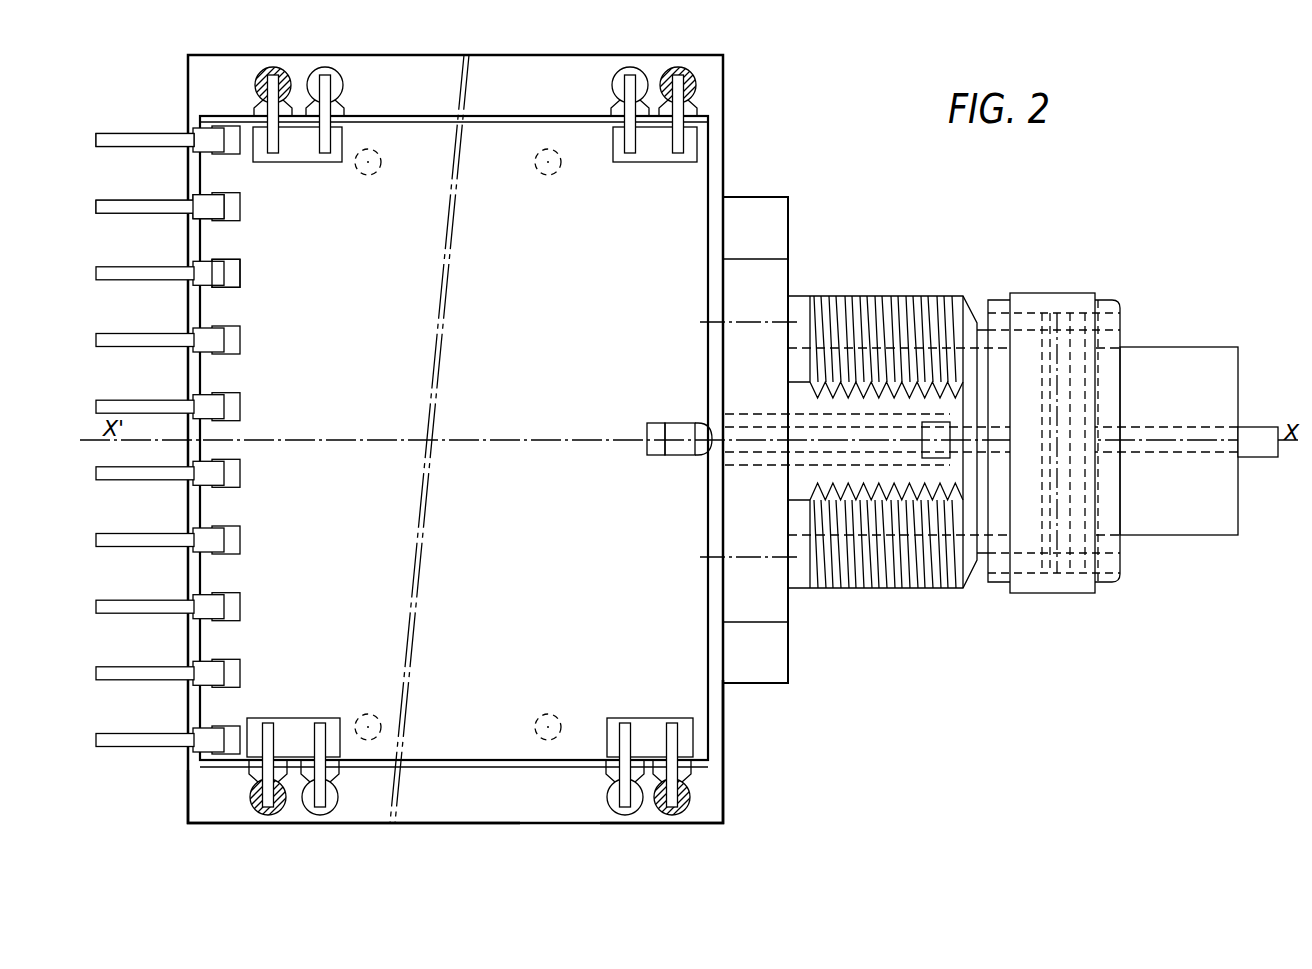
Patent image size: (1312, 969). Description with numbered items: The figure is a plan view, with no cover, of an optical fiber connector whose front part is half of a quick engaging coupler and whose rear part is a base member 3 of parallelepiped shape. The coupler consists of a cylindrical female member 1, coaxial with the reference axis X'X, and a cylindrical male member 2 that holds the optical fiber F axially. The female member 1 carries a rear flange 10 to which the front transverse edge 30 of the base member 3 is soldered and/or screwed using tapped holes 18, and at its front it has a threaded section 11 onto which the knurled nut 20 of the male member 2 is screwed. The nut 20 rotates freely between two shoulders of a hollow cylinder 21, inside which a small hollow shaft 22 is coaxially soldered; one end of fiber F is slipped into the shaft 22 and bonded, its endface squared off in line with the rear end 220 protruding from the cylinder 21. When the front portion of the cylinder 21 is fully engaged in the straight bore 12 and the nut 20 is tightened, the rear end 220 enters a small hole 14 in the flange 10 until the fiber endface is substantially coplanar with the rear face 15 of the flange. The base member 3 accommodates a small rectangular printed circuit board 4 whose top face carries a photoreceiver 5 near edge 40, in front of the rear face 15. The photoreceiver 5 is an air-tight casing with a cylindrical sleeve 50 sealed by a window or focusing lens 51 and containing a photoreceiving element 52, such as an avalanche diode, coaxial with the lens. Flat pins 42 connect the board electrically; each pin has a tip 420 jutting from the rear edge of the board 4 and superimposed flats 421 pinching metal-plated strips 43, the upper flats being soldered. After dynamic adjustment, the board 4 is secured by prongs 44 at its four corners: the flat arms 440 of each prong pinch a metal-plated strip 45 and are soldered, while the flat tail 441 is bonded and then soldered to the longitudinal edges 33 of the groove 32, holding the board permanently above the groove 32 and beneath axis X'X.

The female member 1 is at (860, 307).
The male member 2 is at (1033, 440).
The base member 3 is at (188, 578).
The printed circuit board 4 is at (215, 503).
The photoreceiver 5 is at (658, 435).
The rear flange 10 is at (762, 213).
The threaded section 11 is at (1060, 312).
The straight bore 12 is at (917, 353).
The small hole 14 is at (748, 418).
The rear face 15 is at (717, 298).
The tapped holes 18 is at (700, 325).
The knurled nut 20 is at (1040, 588).
The hollow cylinder 21 is at (1170, 355).
The hollow shaft 22 is at (1255, 427).
The front transverse edge 30 is at (725, 162).
The groove 32 is at (425, 765).
The longitudinal edges 33 is at (197, 795).
The edge 40 is at (720, 710).
The flat pins 42 is at (143, 131).
The metal-plated strips 43 is at (243, 270).
The prongs 44 is at (268, 762).
The metal-plated strip 45 is at (307, 718).
The sleeve 50 is at (677, 430).
The lens 51 is at (707, 442).
The photoreceiving element 52 is at (648, 432).
The rear end 220 is at (772, 455).
The tip 420 is at (138, 205).
The flats 421 is at (213, 203).
The flat arms 440 is at (630, 145).
The flat tail 441 is at (675, 92).